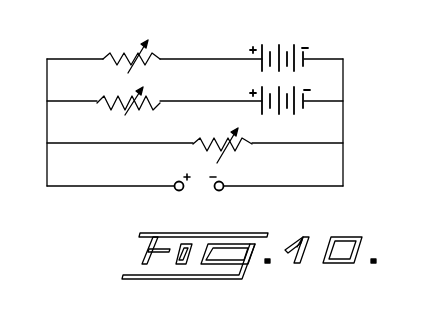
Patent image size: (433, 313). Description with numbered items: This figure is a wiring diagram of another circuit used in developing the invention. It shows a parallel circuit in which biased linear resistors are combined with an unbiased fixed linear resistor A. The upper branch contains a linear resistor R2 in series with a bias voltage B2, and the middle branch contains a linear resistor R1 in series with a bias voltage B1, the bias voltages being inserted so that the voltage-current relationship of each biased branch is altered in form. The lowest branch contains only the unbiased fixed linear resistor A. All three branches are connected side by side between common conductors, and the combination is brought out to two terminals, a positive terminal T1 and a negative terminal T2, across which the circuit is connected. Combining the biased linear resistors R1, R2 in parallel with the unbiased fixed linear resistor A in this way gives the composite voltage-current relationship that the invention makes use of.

The biased linear resistor R2 is at (158, 50).
The biased linear resistor R1 is at (156, 93).
The fixed linear resistor A is at (249, 142).
The bias voltage B2 is at (290, 46).
The bias voltage B1 is at (293, 90).
The terminal T1 is at (176, 194).
The terminal T2 is at (221, 195).